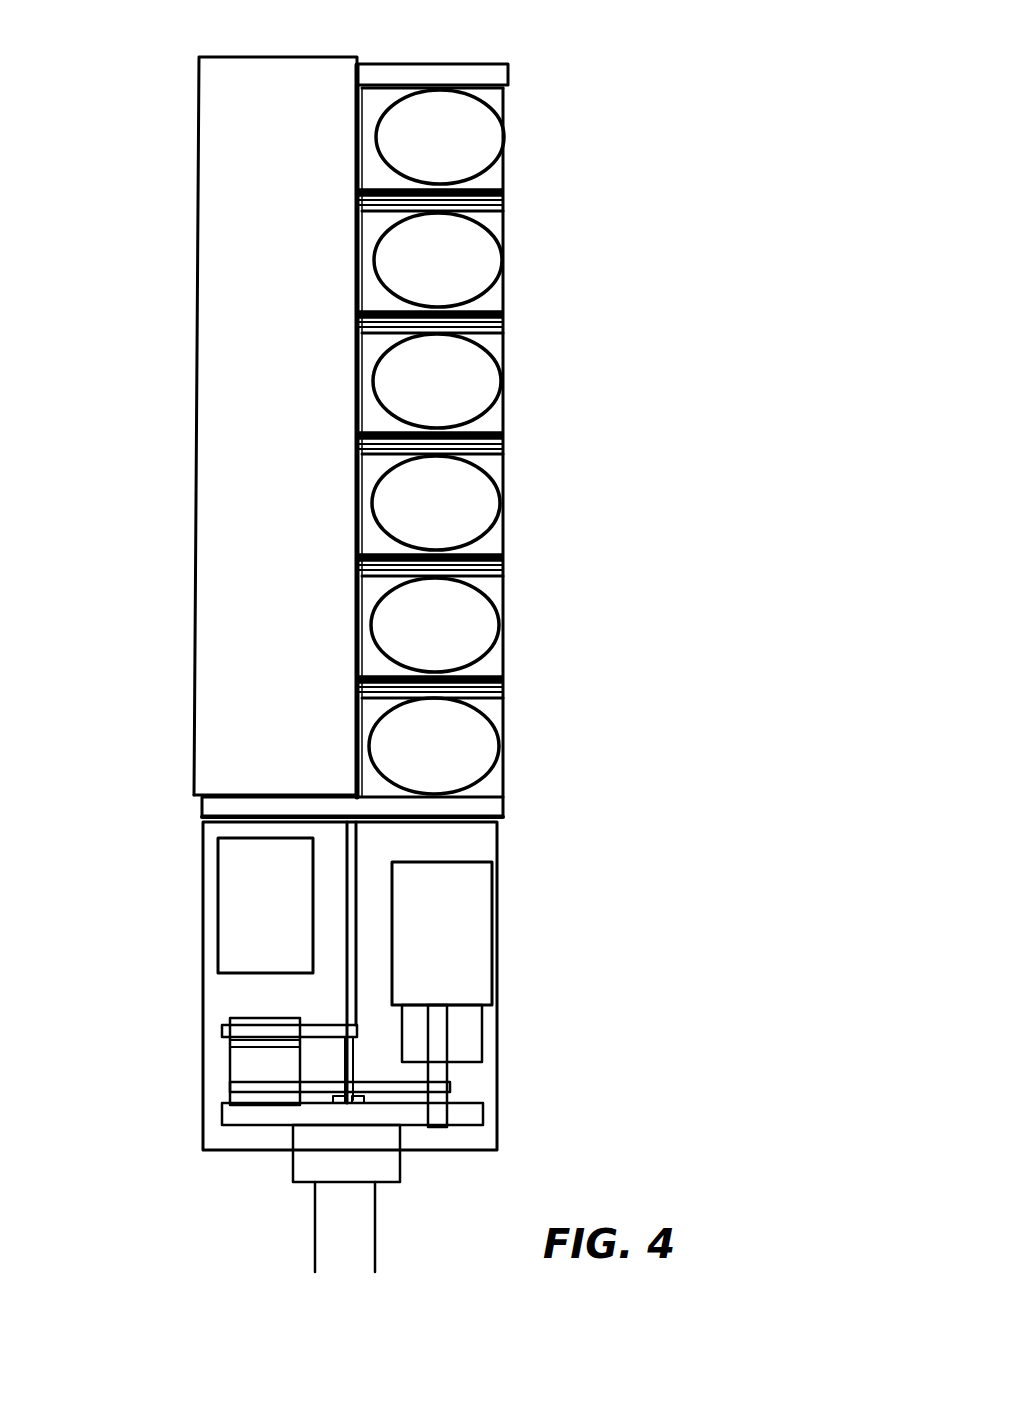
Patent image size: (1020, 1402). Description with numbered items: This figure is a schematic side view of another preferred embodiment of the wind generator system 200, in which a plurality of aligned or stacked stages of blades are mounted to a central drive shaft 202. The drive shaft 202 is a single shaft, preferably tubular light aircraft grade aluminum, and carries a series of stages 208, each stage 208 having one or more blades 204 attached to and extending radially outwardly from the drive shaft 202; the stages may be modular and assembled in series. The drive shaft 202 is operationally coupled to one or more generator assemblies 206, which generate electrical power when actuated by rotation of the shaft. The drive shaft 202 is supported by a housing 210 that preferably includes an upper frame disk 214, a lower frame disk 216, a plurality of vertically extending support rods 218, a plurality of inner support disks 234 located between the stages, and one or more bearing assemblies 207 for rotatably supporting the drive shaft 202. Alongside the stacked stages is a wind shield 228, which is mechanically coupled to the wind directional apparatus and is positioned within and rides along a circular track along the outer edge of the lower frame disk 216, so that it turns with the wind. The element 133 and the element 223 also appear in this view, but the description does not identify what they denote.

The wind generator system 200 is at (673, 440).
The housing 210 is at (445, 49).
The upper frame disk 214 is at (508, 74).
The stage 208 is at (522, 152).
The blade 204 is at (503, 258).
The inner support disk 234 is at (503, 318).
The support rod 218 is at (505, 474).
The wind shield 228 is at (242, 333).
The support plate 133 is at (273, 795).
The lower frame disk 216 is at (473, 815).
The drive shaft 202 is at (345, 988).
The controller 223 is at (252, 888).
The generator assembly 206 is at (446, 931).
The bearing assembly 207 is at (335, 1100).